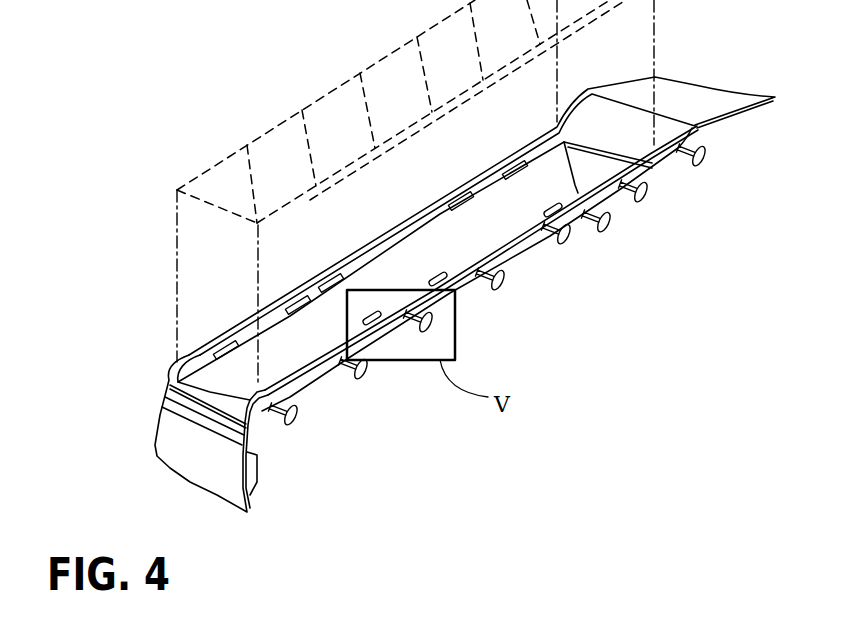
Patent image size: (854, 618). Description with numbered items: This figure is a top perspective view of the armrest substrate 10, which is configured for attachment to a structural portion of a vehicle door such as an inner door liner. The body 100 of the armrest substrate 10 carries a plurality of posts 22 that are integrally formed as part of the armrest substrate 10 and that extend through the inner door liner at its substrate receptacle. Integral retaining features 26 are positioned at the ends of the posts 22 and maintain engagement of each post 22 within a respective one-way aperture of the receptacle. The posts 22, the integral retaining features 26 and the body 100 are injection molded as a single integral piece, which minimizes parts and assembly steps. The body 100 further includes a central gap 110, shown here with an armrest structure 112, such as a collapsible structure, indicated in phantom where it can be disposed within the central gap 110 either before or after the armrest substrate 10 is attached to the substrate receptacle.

The armrest substrate 10 is at (138, 420).
The posts 22 is at (642, 180).
The integral retaining features 26 is at (604, 231).
The body 100 is at (175, 402).
The central gap 110 is at (487, 224).
The armrest structure 112 is at (333, 84).